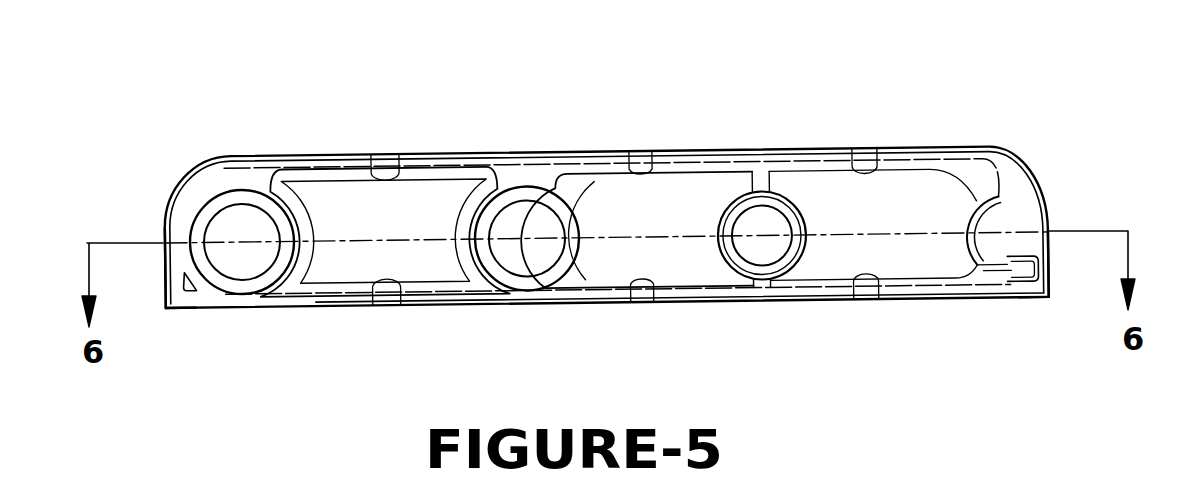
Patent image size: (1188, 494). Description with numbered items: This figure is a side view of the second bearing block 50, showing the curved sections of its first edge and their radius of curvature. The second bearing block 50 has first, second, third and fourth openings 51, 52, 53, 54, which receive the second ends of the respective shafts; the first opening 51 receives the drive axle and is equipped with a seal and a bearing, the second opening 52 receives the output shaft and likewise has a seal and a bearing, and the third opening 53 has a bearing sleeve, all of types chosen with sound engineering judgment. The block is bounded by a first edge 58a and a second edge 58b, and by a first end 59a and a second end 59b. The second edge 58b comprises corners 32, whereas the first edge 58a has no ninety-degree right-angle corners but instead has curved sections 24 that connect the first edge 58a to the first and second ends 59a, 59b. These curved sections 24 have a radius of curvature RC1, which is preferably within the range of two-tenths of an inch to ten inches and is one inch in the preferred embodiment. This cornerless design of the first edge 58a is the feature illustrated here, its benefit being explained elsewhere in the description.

The second bearing block 50 is at (363, 78).
The curved section 24 is at (192, 178).
The corner 32 is at (167, 308).
The first opening 51 is at (245, 270).
The second opening 52 is at (528, 267).
The third opening 53 is at (768, 250).
The fourth opening 54 is at (1002, 248).
The first edge 58a is at (543, 155).
The second edge 58b is at (615, 305).
The first end 59a is at (163, 240).
The second end 59b is at (1048, 223).
The radius of curvature RC1 is at (952, 242).